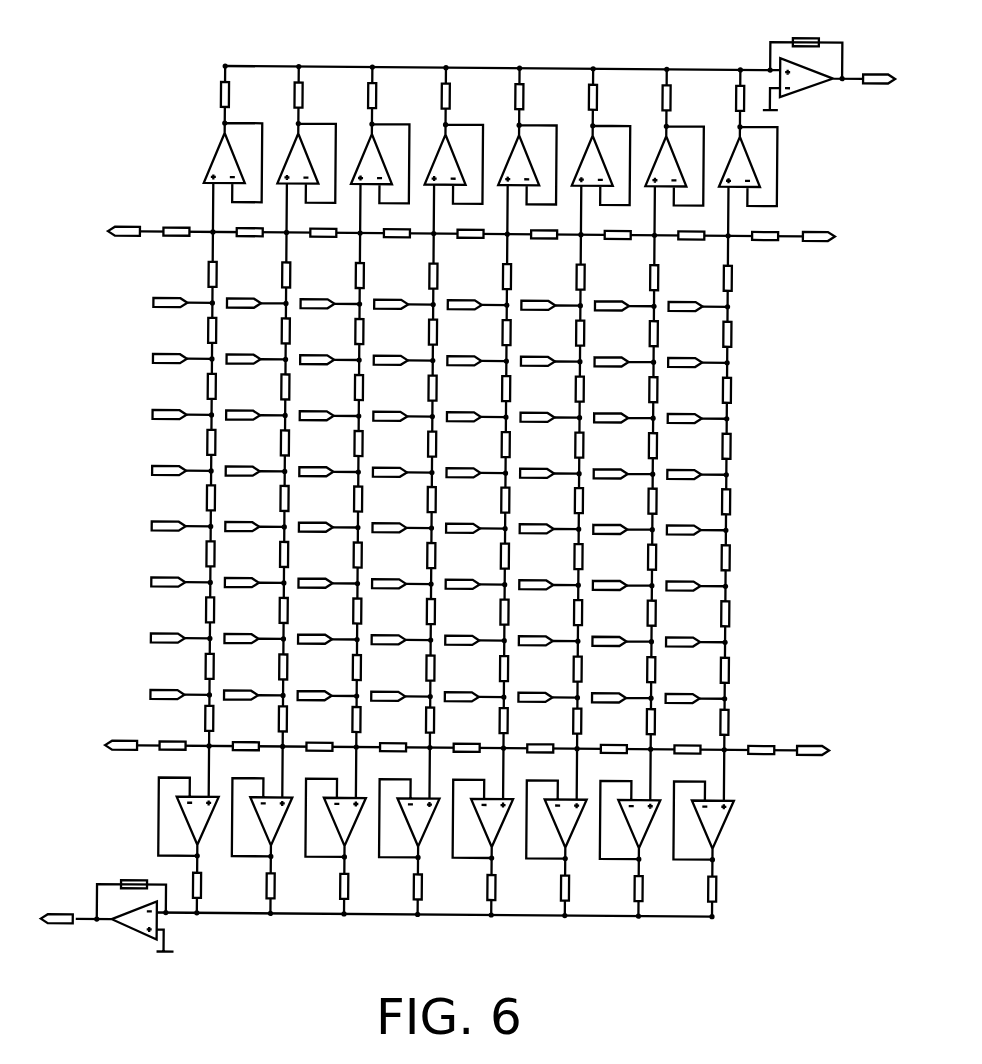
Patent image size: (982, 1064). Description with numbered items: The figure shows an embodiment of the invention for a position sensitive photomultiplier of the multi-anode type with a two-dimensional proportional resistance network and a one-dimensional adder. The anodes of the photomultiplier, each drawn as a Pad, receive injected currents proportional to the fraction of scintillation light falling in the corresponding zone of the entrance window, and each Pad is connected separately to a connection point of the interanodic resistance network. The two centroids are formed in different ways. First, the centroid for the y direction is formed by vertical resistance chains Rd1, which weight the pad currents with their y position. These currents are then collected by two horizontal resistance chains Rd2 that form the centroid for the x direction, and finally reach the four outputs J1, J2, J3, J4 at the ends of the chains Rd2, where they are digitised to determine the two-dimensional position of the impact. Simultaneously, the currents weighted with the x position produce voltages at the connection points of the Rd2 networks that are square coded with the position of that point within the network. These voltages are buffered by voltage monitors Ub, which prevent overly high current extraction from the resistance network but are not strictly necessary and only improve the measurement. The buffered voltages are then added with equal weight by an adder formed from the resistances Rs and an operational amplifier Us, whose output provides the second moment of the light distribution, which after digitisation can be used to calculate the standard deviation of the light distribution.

The adder resistance Rs is at (470, 458).
The voltage monitor Ub is at (468, 491).
The resistance chain Rd1 is at (483, 498).
The resistance chain Rd2 is at (469, 500).
The pad Pad is at (440, 506).
The output J1 is at (121, 755).
The output J2 is at (813, 757).
The output J3 is at (819, 244).
The output J4 is at (124, 241).
The operational amplifier Us is at (464, 497).